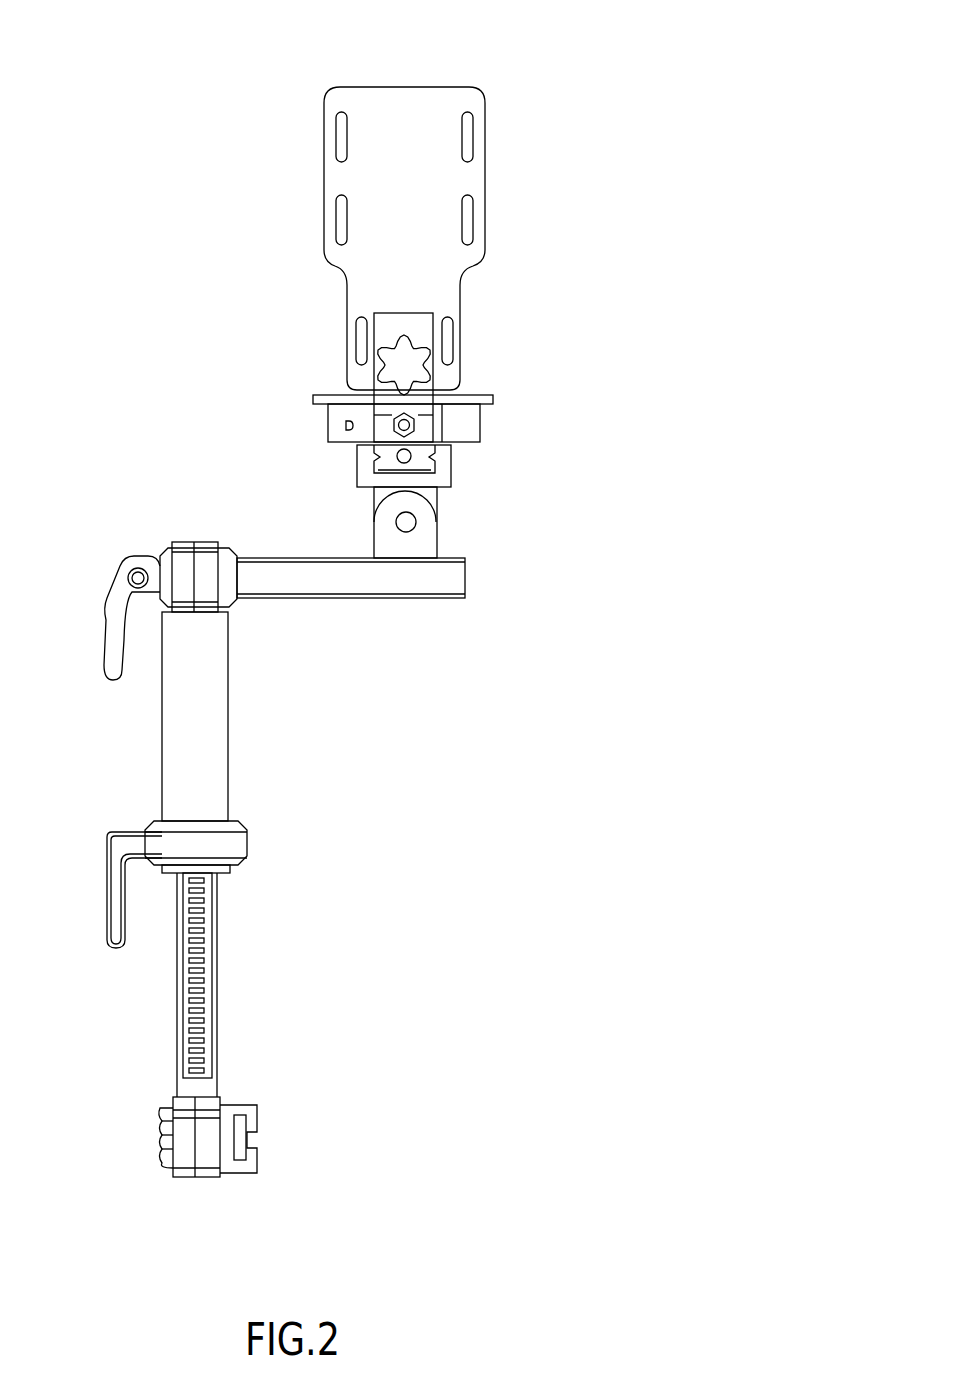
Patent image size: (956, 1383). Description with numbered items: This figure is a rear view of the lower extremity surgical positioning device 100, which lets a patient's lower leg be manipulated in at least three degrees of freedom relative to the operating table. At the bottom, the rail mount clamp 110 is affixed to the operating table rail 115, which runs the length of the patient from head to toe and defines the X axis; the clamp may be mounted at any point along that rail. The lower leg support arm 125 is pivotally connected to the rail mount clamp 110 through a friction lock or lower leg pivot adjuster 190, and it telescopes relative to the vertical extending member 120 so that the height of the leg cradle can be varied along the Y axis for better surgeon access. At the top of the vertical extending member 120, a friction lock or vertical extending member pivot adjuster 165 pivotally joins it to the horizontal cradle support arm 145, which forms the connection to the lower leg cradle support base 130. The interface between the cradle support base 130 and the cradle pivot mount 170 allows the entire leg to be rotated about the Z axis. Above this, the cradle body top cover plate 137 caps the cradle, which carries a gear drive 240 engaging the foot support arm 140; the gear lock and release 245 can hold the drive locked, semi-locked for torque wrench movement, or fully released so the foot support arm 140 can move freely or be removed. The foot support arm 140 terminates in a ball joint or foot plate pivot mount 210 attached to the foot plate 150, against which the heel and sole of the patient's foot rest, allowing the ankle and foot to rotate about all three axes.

The positioning device 100 is at (592, 95).
The foot plate 150 is at (324, 203).
The foot plate pivot mount 210 is at (380, 364).
The cradle body top cover plate 137 is at (480, 395).
The gear drive 240 is at (365, 412).
The foot support arm 140 is at (415, 412).
The gear lock and release 245 is at (349, 432).
The lower leg/calf cradle support base 130 is at (451, 462).
The cradle pivot mount 170 is at (415, 532).
The cradle support arm 145 is at (330, 588).
The vertical extending member pivot adjuster 165 is at (190, 545).
The lower leg support arm vertical extending member 120 is at (230, 715).
The lower leg support arm 125 is at (218, 990).
The lower leg pivot adjuster 190 is at (196, 1177).
The rail mount clamp 110 is at (160, 1138).
The operating table rail 115 is at (250, 1140).